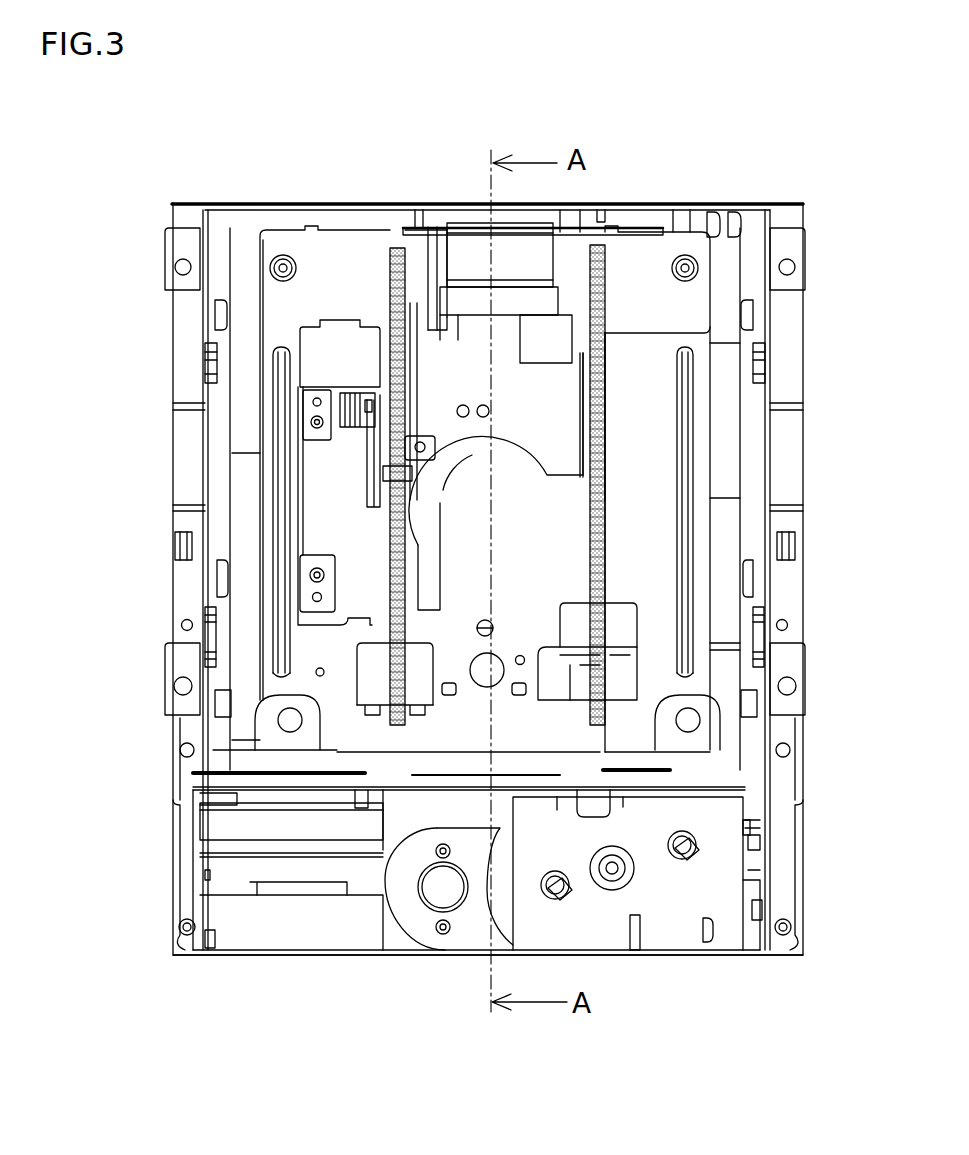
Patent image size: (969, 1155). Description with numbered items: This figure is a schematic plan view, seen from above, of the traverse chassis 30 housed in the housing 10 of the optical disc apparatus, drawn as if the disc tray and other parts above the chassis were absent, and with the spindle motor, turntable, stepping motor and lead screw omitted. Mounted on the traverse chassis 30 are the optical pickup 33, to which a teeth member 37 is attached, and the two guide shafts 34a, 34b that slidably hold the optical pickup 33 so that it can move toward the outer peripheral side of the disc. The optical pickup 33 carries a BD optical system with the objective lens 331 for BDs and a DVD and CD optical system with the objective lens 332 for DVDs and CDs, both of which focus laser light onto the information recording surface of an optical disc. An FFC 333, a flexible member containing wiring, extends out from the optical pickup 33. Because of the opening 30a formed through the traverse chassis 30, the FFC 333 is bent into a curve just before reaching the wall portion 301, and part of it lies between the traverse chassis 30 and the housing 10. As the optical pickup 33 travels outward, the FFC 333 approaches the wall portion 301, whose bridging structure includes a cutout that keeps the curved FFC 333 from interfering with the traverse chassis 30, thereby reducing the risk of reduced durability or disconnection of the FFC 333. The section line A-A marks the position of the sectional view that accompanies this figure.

The housing 10 is at (783, 603).
The traverse chassis 30 is at (645, 407).
The opening 30a is at (441, 265).
The wall portion 301 is at (638, 232).
The FFC 333 is at (529, 262).
The objective lens 332 is at (461, 406).
The objective lens 331 is at (489, 408).
The optical pickup 33 is at (563, 473).
The guide shaft 34a is at (400, 566).
The guide shaft 34b is at (597, 513).
The teeth member 37 is at (390, 457).